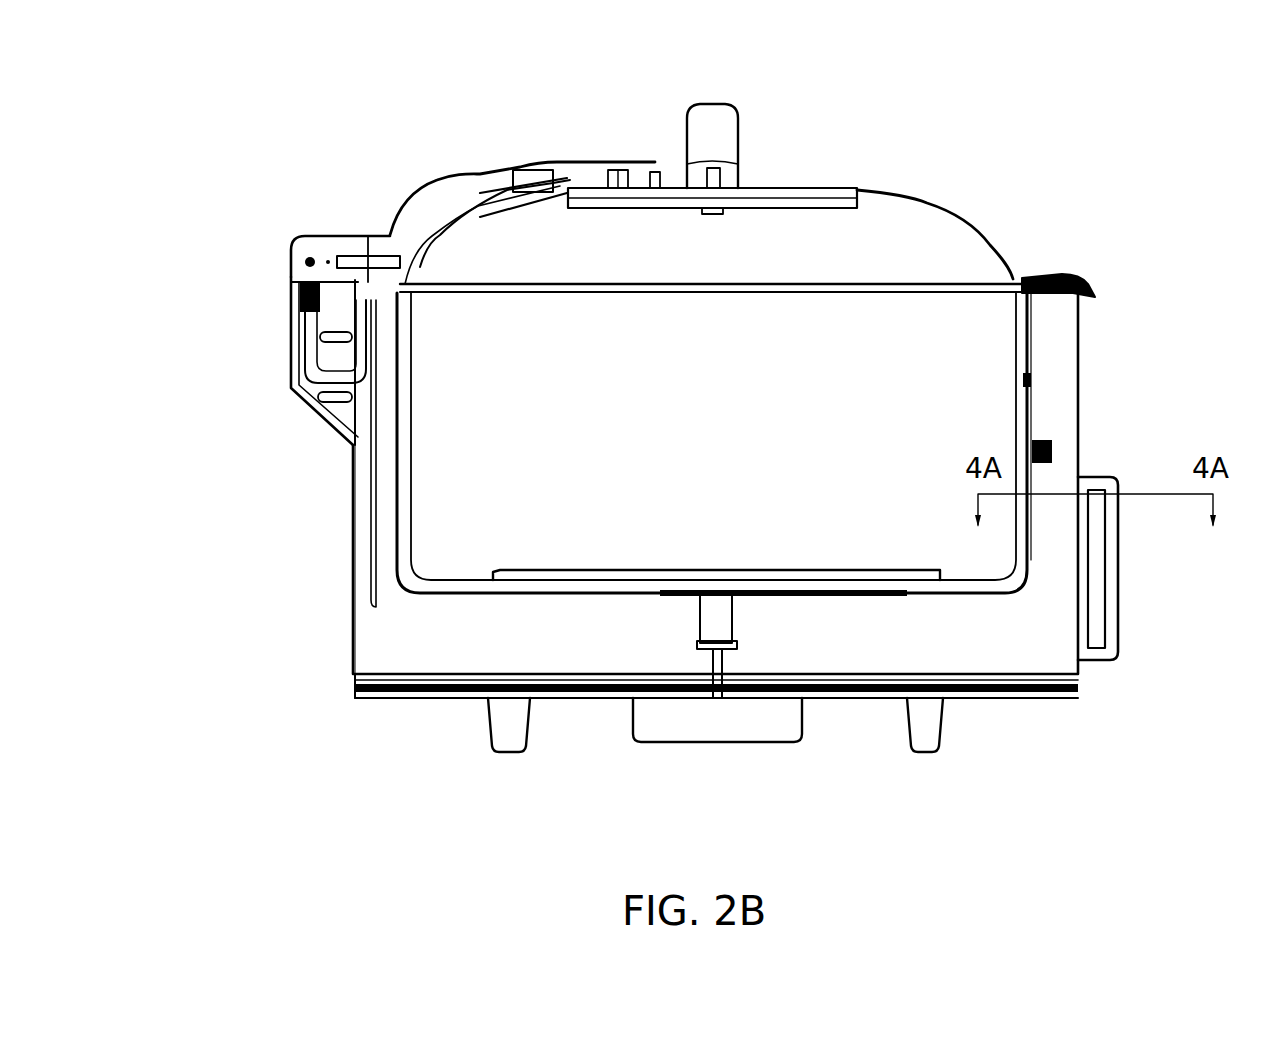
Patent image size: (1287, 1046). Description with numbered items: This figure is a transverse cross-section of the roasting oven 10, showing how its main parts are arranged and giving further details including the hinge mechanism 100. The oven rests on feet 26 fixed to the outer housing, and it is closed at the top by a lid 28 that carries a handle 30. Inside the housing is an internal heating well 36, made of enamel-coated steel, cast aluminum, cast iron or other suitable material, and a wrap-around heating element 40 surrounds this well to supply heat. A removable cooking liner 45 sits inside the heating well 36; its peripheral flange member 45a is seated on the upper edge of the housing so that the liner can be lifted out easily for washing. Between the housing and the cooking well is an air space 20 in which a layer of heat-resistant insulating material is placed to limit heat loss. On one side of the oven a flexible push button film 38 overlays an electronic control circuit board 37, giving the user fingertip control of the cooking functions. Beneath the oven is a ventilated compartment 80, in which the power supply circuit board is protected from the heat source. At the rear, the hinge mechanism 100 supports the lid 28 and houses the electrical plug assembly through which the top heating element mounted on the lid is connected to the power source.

The roasting oven 10 is at (985, 168).
The air space 20 is at (997, 627).
The feet 26 is at (512, 717).
The lid 28 is at (1010, 240).
The handle 30 is at (683, 108).
The internal heating well 36 is at (427, 590).
The electronic control circuit board 37 is at (1105, 622).
The push button film 38 is at (1120, 590).
The wrap-around heating element 40 is at (1055, 375).
The removable cooking liner 45 is at (418, 560).
The peripheral flange member 45a is at (1095, 296).
The ventilated compartment 80 is at (635, 737).
The hinge mechanism 100 is at (362, 210).